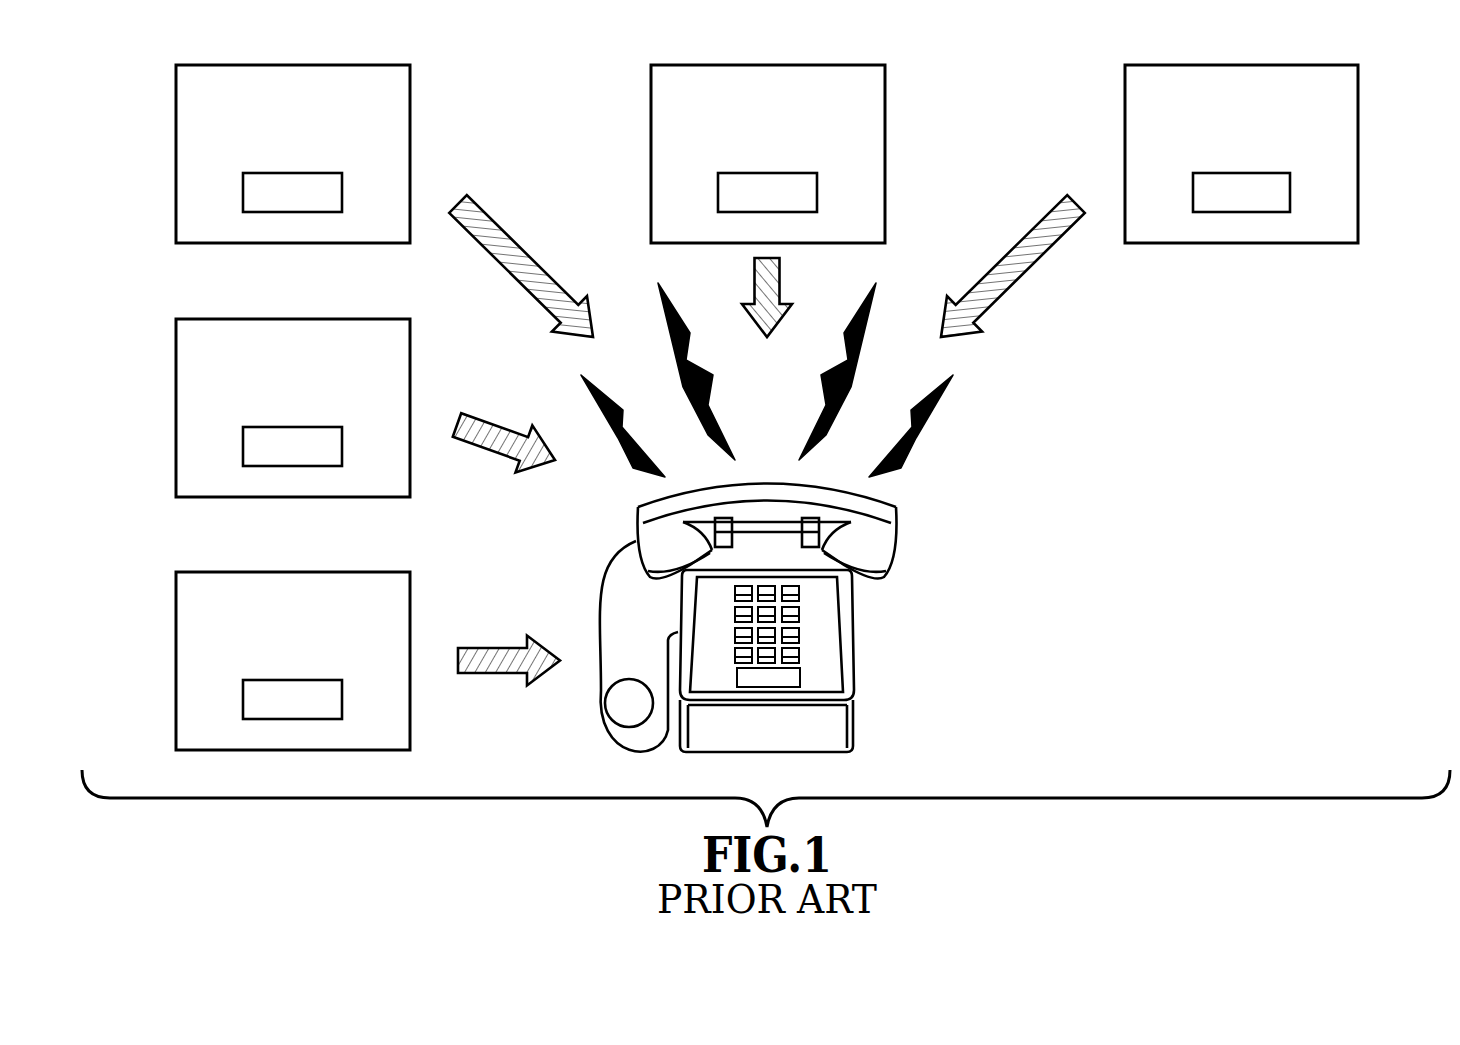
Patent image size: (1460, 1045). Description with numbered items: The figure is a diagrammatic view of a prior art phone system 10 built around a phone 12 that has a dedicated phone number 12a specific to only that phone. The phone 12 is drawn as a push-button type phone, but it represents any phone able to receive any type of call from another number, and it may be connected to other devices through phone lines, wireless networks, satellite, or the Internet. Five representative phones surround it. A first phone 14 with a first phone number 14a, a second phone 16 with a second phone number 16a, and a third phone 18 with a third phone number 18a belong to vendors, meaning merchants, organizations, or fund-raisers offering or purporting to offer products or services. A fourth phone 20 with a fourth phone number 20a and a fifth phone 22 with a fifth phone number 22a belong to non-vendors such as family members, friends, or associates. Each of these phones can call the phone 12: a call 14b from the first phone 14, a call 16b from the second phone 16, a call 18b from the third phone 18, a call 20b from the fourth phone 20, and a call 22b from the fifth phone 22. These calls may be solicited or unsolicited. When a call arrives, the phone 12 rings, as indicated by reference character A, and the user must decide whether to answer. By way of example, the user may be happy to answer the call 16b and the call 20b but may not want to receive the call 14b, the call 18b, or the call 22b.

The phone system 10 is at (1146, 601).
The phone 12 is at (858, 633).
The dedicated phone number 12a is at (793, 679).
The first phone 14 is at (174, 628).
The first phone number 14a is at (257, 700).
The call 14b is at (488, 648).
The second phone 16 is at (174, 375).
The second phone number 16a is at (257, 447).
The call 16b is at (490, 422).
The third phone 18 is at (174, 121).
The third phone number 18a is at (257, 193).
The call 18b is at (491, 212).
The fourth phone 20 is at (649, 121).
The fourth phone number 20a is at (732, 193).
The call 20b is at (755, 278).
The fifth phone 22 is at (1360, 121).
The fifth phone number 22a is at (1273, 193).
The call 22b is at (1044, 212).
The ringing of the phone A is at (930, 450).